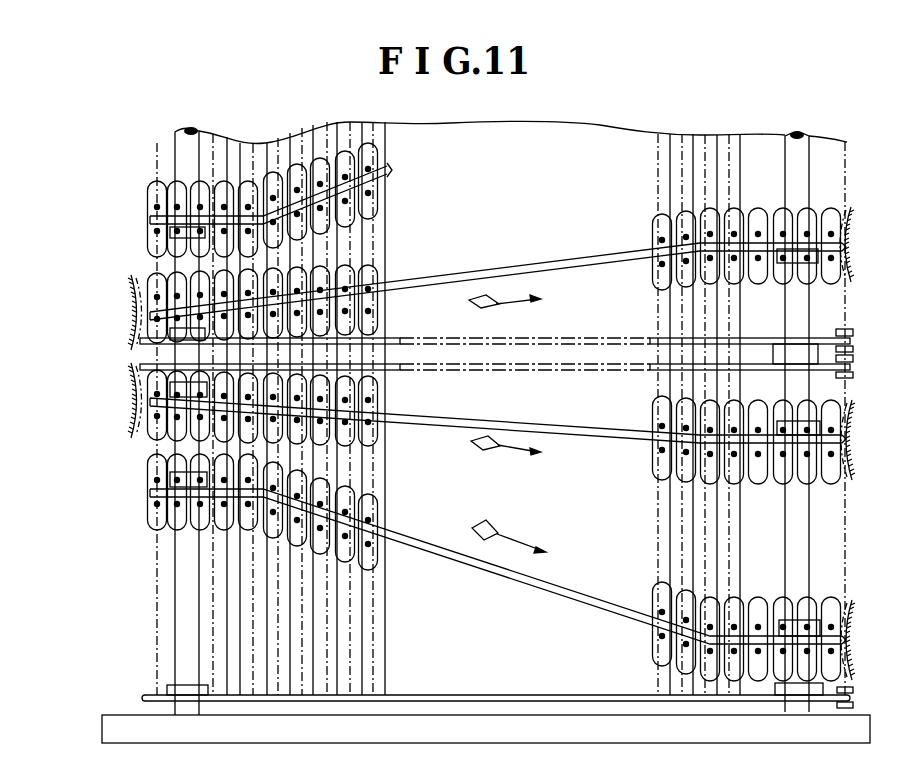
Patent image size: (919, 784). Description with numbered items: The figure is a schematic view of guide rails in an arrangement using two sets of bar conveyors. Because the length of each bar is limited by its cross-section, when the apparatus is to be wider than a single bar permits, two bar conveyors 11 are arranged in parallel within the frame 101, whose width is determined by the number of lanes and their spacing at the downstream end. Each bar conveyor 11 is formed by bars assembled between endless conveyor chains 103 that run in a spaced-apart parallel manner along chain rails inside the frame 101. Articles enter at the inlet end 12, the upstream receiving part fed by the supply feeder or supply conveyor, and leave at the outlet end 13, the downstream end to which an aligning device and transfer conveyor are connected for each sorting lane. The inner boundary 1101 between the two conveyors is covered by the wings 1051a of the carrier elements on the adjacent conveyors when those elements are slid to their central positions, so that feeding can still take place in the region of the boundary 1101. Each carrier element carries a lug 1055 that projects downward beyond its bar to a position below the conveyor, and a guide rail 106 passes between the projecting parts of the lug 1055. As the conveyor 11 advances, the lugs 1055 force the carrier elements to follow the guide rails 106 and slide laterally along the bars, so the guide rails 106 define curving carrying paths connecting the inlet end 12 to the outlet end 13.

The bar conveyor 11 is at (657, 162).
The guide rail 106 is at (491, 276).
The lug 1055 is at (662, 250).
The outlet end 13 is at (857, 241).
The inlet end 12 is at (131, 300).
The inner boundary 1101 is at (162, 341).
The wings 1051a is at (140, 368).
The endless conveyor chains 103 is at (853, 333).
The frame 101 is at (106, 715).